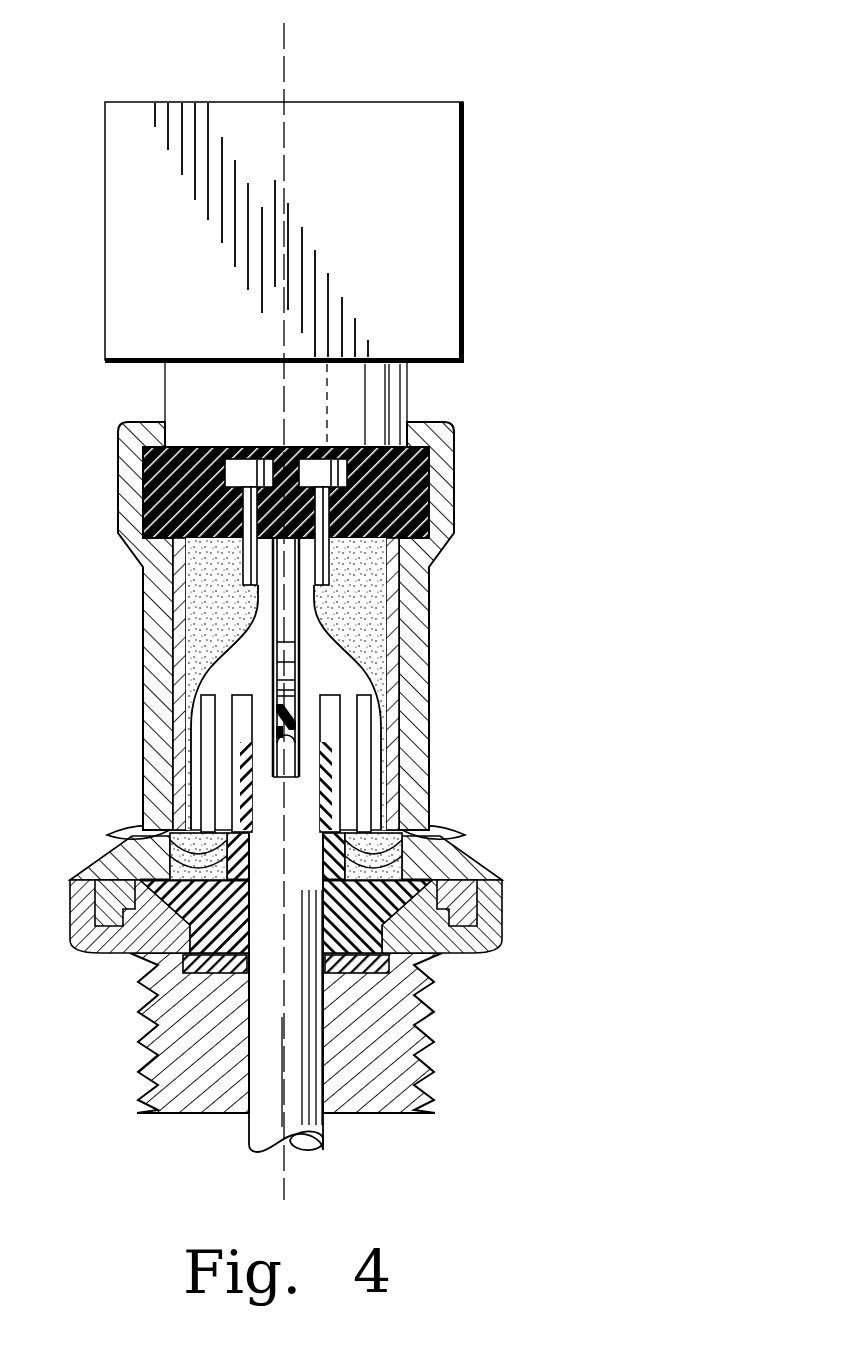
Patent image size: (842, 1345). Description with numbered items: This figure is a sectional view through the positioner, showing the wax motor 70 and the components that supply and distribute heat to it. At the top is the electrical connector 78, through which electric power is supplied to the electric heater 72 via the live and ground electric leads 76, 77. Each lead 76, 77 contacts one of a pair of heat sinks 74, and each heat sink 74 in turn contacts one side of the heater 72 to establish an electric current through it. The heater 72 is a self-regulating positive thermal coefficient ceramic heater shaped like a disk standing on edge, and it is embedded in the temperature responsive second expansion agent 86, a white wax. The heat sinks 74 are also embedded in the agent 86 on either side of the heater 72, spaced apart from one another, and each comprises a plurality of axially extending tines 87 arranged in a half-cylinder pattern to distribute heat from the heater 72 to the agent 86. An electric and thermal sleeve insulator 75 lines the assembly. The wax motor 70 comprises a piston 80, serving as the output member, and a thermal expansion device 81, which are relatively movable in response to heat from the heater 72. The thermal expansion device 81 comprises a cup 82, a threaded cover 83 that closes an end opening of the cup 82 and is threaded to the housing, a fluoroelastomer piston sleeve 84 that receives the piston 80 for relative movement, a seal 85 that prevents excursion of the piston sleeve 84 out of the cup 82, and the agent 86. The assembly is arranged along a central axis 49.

The longitudinal axis 49 is at (285, 42).
The wax motor 70 is at (462, 688).
The electric heater 72 is at (290, 623).
The heat sinks 74 is at (270, 646).
The electric and thermal sleeve insulator 75 is at (172, 628).
The live electric lead 76 is at (318, 468).
The ground electric lead 77 is at (245, 468).
The electrical connector 78 is at (437, 108).
The piston 80 is at (260, 1120).
The thermal expansion device 81 is at (432, 788).
The cup 82 is at (150, 712).
The threaded cover 83 is at (155, 1040).
The piston sleeve 84 is at (410, 858).
The seal 85 is at (417, 970).
The second expansion agent 86 is at (207, 577).
The tines 87 is at (118, 835).